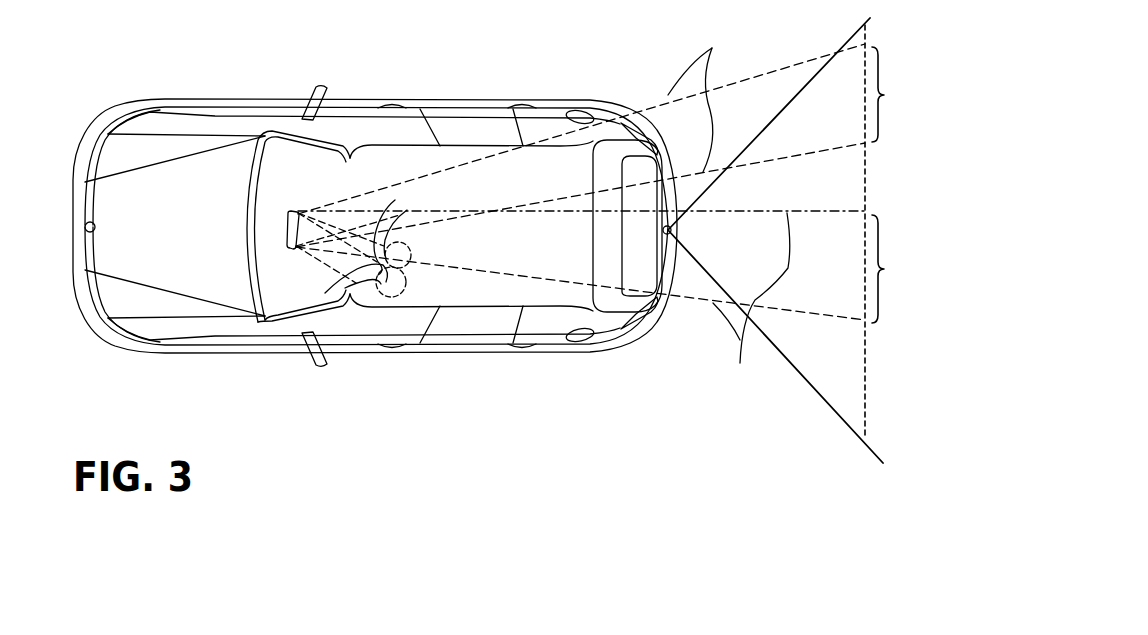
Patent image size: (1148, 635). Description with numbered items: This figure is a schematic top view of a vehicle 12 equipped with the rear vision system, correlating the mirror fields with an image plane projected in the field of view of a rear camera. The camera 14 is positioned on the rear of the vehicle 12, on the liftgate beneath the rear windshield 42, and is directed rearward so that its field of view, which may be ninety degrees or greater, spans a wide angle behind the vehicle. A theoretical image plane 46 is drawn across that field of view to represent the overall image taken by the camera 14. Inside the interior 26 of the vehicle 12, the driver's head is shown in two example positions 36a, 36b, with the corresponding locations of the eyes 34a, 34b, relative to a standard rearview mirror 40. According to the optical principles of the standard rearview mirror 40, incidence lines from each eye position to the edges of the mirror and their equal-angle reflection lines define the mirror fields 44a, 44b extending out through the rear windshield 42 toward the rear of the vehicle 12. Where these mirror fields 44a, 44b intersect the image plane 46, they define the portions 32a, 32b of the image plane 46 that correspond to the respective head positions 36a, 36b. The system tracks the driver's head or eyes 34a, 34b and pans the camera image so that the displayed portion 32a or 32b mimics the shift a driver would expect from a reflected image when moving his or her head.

The vehicle 12 is at (287, 74).
The camera 14 is at (676, 228).
The interior 26 is at (502, 143).
The portion of the image plane 32a is at (899, 269).
The portion of the image plane 32b is at (899, 94).
The eyes 34a is at (395, 200).
The eyes 34b is at (325, 293).
The head position 36a is at (407, 249).
The head position 36b is at (404, 276).
The standard rearview mirror 40 is at (291, 210).
The rear windshield 42 is at (650, 253).
The mirror field 44a is at (751, 300).
The mirror field 44b is at (710, 99).
The theoretical image plane 46 is at (866, 173).